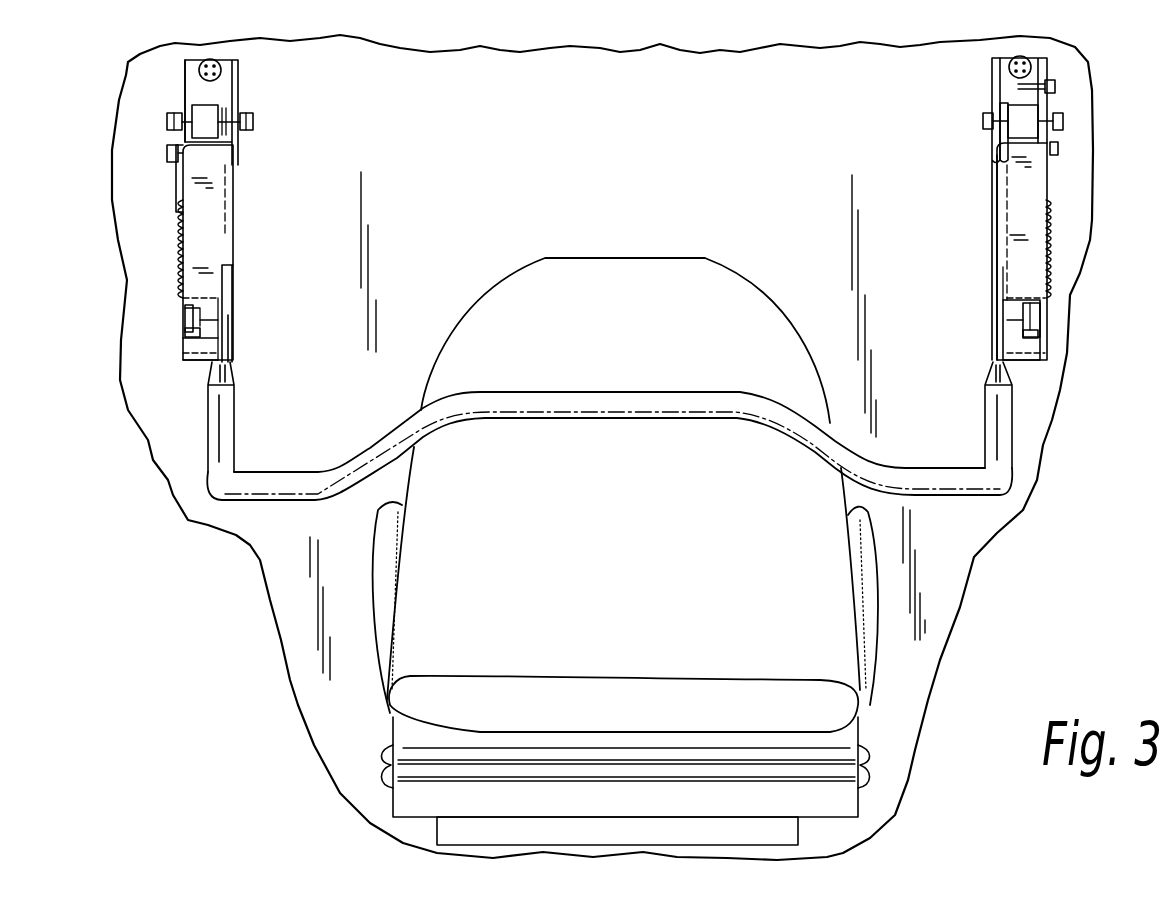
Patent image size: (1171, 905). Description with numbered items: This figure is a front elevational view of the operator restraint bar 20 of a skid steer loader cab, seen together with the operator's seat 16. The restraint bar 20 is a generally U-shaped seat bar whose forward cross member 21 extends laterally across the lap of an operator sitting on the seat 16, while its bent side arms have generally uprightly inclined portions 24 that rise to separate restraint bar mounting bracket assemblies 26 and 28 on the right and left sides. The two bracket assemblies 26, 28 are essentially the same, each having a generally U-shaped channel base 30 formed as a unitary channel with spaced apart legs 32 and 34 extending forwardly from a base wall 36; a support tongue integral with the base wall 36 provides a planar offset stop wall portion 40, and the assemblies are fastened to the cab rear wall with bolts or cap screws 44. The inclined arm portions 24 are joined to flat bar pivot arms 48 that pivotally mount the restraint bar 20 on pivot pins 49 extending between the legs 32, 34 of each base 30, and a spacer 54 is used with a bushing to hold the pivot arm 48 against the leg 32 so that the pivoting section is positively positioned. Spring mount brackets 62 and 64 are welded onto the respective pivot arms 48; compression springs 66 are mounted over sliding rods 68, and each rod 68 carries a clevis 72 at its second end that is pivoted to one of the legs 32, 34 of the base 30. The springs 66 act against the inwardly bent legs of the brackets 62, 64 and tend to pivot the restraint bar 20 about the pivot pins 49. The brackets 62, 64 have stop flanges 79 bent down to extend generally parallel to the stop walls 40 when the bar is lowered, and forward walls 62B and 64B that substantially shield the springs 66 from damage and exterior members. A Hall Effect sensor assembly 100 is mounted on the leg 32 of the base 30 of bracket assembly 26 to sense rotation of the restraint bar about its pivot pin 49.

The operator's seat 16 is at (606, 262).
The operator restraint bar 20 is at (748, 425).
The forward cross member 21 is at (585, 396).
The uprightly inclined portions 24 is at (238, 413).
The restraint bar mounting bracket assembly 26 is at (1066, 250).
The restraint bar mounting bracket assembly 28 is at (248, 226).
The U-shaped channel base 30 is at (250, 180).
The leg 32 is at (238, 146).
The leg 34 is at (184, 92).
The base wall 36 is at (222, 92).
The planar offset stop wall portion 40 is at (186, 337).
The bolts or cap screws 44 is at (222, 62).
The flat bar pivot arm 48 is at (202, 336).
The pivot pin 49 is at (173, 124).
The spacer 54 is at (205, 124).
The spring mount bracket 62 is at (1020, 180).
The forward wall 62B is at (1020, 207).
The spring mount bracket 64 is at (208, 254).
The forward wall 64B is at (204, 224).
The compression spring 66 is at (178, 266).
The sliding rod 68 is at (194, 310).
The clevis 72 is at (180, 170).
The stop flange 79 is at (212, 317).
The Hall Effect sensor assembly 100 is at (1027, 128).